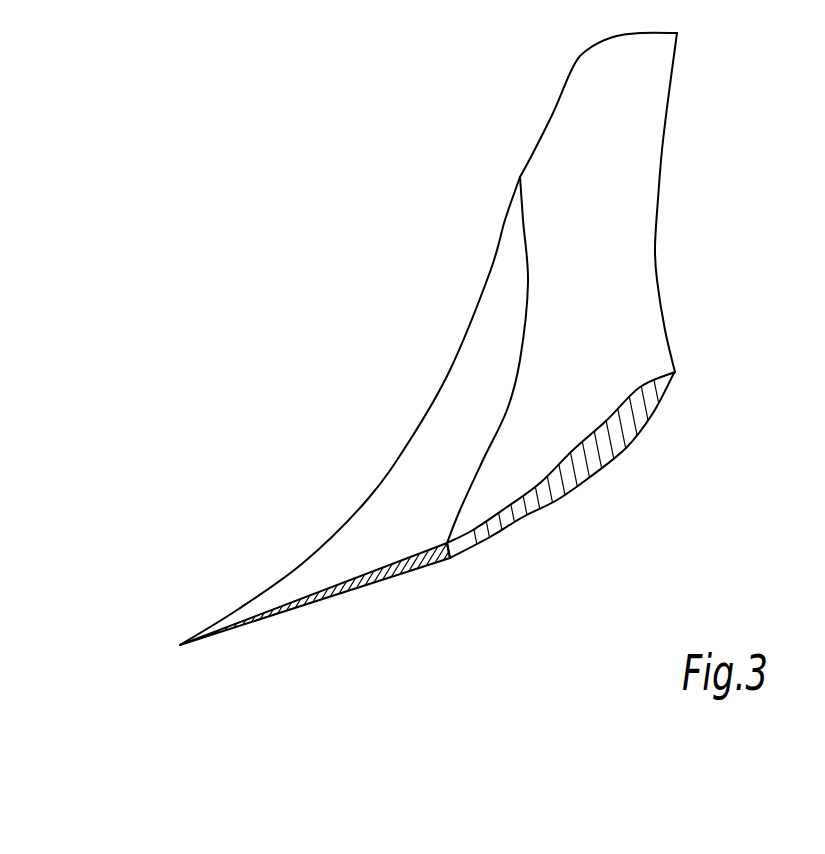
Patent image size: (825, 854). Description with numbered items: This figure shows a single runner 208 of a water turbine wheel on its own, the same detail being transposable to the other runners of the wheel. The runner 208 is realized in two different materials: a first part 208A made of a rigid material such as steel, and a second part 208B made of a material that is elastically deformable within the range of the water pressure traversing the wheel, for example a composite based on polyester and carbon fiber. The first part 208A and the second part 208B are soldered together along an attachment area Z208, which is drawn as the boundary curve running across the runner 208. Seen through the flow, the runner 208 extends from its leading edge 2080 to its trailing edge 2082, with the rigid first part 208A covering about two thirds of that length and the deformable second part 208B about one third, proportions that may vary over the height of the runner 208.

The runner 208 is at (501, 339).
The first part 208A is at (548, 288).
The second part 208B is at (415, 478).
The attachment area Z208 is at (455, 519).
The leading edge 2080 is at (658, 199).
The trailing edge 2082 is at (178, 645).